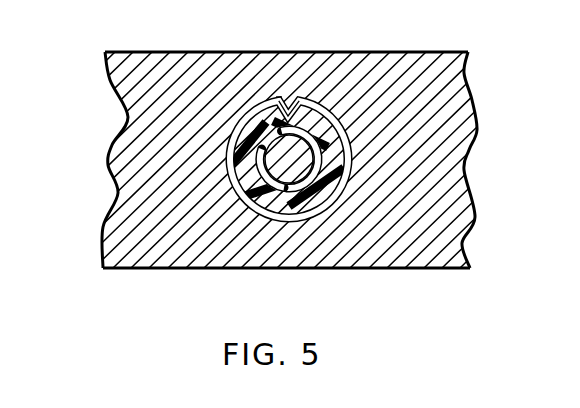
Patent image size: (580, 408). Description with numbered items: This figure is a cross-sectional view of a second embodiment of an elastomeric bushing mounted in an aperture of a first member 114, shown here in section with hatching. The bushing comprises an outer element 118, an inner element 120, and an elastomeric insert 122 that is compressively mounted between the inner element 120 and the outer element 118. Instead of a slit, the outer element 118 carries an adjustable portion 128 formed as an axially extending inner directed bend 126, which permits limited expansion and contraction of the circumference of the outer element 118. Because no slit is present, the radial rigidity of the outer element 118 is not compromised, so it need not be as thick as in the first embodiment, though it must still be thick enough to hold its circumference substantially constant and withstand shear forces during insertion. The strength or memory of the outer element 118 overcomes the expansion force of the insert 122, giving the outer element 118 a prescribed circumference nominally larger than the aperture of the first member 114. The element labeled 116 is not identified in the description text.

The first member 114 is at (425, 218).
The central bore 116 is at (279, 156).
The outer element 118 is at (235, 193).
The inner element 120 is at (272, 140).
The elastomeric insert 122 is at (282, 205).
The inner directed bend 126 is at (293, 103).
The adjustable portion 128 is at (280, 90).